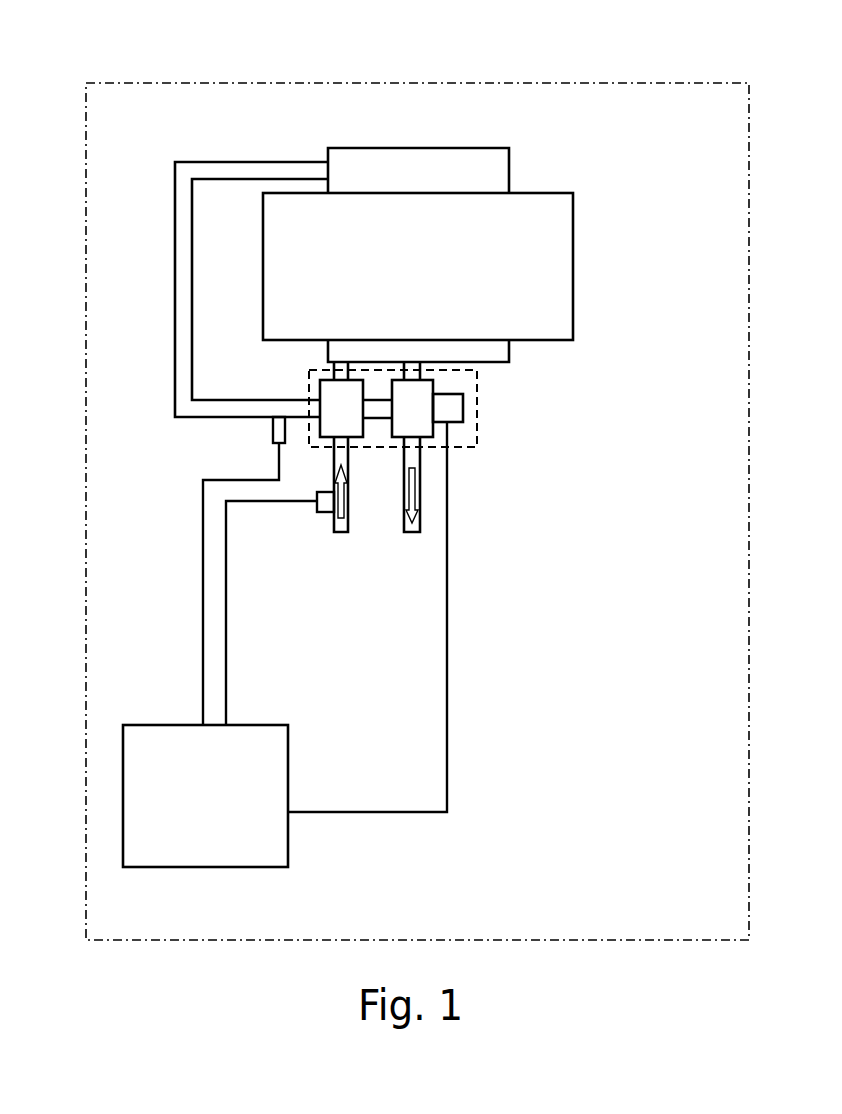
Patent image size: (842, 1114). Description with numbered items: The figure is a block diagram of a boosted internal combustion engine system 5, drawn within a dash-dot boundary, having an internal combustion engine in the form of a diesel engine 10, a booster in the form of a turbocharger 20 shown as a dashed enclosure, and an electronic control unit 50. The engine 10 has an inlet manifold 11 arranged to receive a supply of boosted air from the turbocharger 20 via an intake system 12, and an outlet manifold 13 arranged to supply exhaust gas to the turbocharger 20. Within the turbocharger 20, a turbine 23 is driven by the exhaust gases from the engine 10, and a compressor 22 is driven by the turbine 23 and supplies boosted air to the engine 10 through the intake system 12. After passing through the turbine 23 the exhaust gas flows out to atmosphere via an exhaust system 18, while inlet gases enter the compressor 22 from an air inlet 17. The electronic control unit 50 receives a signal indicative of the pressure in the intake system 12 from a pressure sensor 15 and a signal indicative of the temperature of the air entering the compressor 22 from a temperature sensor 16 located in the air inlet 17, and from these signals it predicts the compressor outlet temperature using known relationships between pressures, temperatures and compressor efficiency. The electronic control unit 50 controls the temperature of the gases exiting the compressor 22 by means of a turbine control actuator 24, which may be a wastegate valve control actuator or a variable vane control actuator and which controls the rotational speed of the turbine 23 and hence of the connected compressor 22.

The boosted internal combustion engine system 5 is at (113, 81).
The diesel engine 10 is at (436, 283).
The inlet manifold 11 is at (511, 173).
The intake system 12 is at (174, 285).
The outlet manifold 13 is at (511, 351).
The pressure sensor 15 is at (272, 428).
The temperature sensor 16 is at (316, 505).
The air inlet 17 is at (346, 534).
The exhaust system 18 is at (409, 534).
The turbocharger 20 is at (481, 408).
The compressor 22 is at (321, 436).
The turbine 23 is at (436, 430).
The turbine control actuator 24 is at (465, 417).
The electronic control unit 50 is at (221, 807).